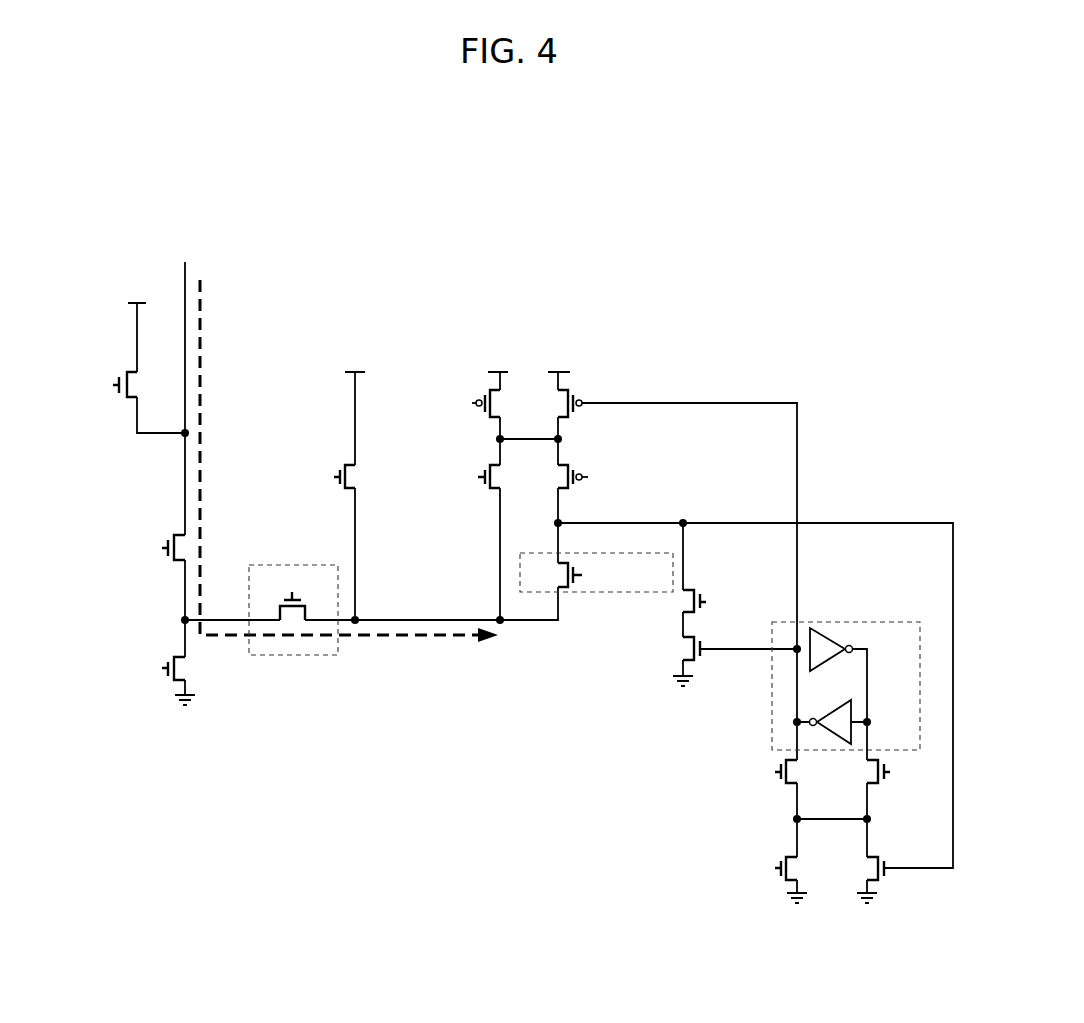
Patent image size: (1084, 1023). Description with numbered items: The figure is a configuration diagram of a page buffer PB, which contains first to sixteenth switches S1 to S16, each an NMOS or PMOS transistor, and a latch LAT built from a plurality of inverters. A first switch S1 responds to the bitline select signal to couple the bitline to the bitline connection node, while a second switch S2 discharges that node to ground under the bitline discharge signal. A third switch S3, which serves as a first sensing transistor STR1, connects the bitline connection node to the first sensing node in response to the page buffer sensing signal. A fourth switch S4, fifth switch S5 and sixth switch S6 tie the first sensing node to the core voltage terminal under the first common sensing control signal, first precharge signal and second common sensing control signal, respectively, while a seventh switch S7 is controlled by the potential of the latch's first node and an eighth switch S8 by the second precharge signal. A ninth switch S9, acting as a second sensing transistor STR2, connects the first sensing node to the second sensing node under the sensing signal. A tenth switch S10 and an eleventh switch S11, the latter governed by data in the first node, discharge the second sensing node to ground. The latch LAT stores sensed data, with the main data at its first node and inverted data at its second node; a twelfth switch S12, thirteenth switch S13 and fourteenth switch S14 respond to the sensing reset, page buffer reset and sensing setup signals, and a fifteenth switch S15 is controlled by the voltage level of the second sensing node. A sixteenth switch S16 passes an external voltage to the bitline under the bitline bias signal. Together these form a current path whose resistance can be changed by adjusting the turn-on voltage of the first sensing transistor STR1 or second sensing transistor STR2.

The page buffer PB is at (793, 280).
The first switch S1 is at (153, 548).
The second switch S2 is at (153, 668).
The third switch S3 is at (292, 613).
The fourth switch S4 is at (309, 478).
The fifth switch S5 is at (453, 403).
The sixth switch S6 is at (453, 478).
The seventh switch S7 is at (562, 403).
The eighth switch S8 is at (617, 478).
The ninth switch S9 is at (602, 574).
The tenth switch S10 is at (722, 603).
The eleventh switch S11 is at (725, 649).
The twelfth switch S12 is at (776, 772).
The thirteenth switch S13 is at (772, 868).
The fourteenth switch S14 is at (892, 773).
The fifteenth switch S15 is at (861, 868).
The sixteenth switch S16 is at (104, 385).
The first sensing transistor STR1 is at (280, 564).
The second sensing transistor STR2 is at (583, 593).
The latch LAT is at (878, 621).